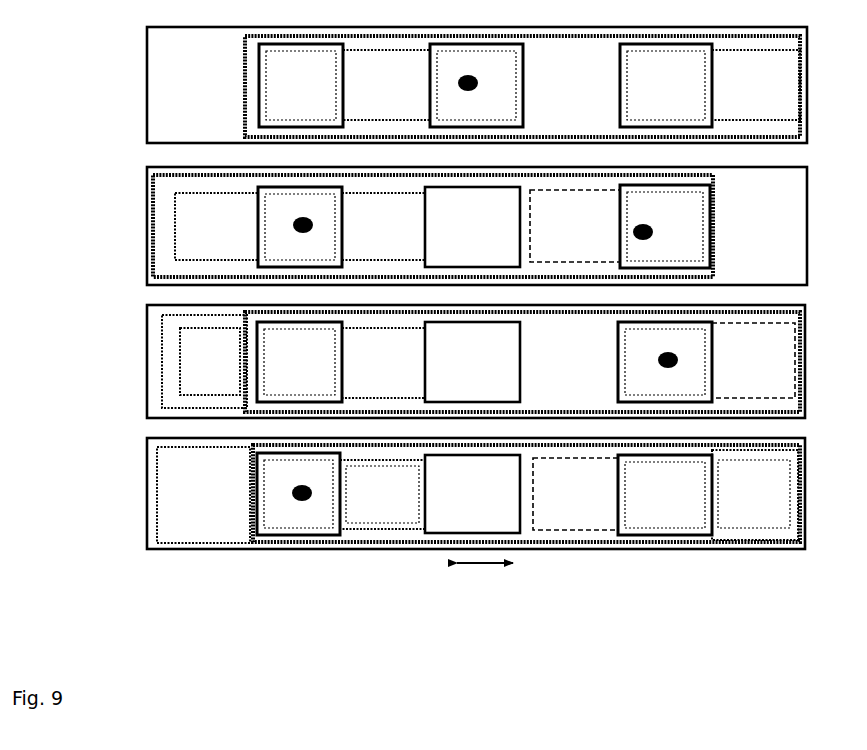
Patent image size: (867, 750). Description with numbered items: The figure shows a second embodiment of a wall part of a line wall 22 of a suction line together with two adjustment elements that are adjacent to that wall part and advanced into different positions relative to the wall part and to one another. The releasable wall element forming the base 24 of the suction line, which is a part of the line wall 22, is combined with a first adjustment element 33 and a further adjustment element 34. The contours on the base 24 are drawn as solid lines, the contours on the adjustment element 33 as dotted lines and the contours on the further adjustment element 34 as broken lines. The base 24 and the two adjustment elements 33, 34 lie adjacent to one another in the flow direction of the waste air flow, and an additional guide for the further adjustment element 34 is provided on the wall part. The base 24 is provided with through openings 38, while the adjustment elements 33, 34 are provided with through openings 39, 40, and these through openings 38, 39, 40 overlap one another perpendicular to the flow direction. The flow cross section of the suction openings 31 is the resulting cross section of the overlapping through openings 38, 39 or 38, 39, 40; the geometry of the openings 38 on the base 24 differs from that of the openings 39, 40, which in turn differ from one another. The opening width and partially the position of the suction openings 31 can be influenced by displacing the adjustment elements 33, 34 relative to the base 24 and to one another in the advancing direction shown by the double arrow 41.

The line wall 22 is at (425, 85).
The base 24 is at (146, 99).
The suction openings 31 is at (445, 89).
The first adjustment element 33 is at (162, 361).
The further adjustment element 34 is at (157, 493).
The through openings 38 is at (678, 95).
The through openings 39 is at (224, 375).
The through openings 40 is at (386, 507).
The double arrow 41 is at (485, 583).